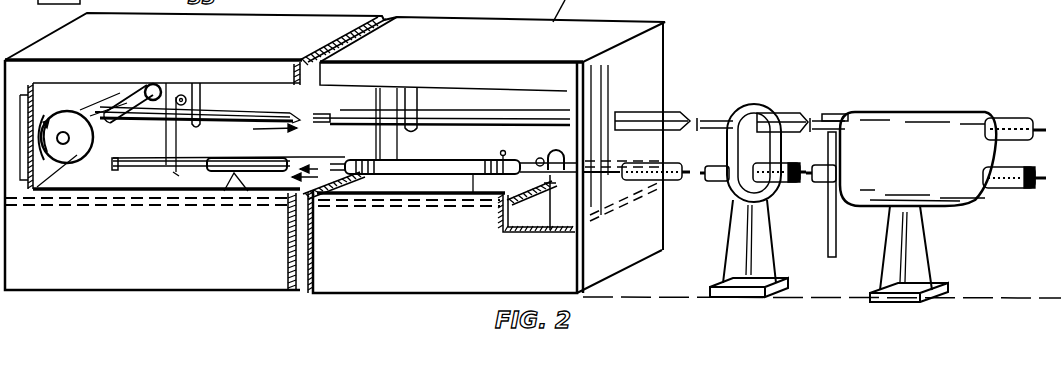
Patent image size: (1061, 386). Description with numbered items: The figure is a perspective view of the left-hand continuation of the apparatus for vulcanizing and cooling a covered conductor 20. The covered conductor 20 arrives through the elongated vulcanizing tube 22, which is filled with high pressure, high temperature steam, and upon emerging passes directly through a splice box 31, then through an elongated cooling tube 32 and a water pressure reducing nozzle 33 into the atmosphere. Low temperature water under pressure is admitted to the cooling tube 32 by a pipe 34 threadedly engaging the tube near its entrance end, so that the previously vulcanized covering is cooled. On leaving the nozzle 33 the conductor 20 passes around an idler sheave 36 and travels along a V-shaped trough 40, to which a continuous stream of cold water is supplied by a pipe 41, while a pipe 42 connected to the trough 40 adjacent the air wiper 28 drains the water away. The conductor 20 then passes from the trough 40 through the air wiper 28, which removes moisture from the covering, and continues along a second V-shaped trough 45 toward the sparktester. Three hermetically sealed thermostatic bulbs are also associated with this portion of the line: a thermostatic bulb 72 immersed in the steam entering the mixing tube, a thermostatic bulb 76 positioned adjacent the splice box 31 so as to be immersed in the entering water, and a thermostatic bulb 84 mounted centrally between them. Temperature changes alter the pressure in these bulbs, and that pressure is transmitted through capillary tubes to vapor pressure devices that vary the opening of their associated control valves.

The covered conductor 20 is at (97, 110).
The vulcanizing tube 22 is at (1018, 192).
The air wiper 28 is at (947, 207).
The splice box 31 is at (500, 156).
The cooling tube 32 is at (412, 156).
The water pressure reducing nozzle 33 is at (162, 175).
The pipe 34 is at (473, 180).
The idler sheave 36 is at (58, 162).
The V-shaped trough 40 is at (251, 107).
The pipe 41 is at (178, 143).
The pipe 42 is at (828, 215).
The V-shaped trough 45 is at (1010, 120).
The thermostatic bulb 72 is at (563, 153).
The thermostatic bulb 76 is at (539, 158).
The thermostatic bulb 84 is at (550, 207).